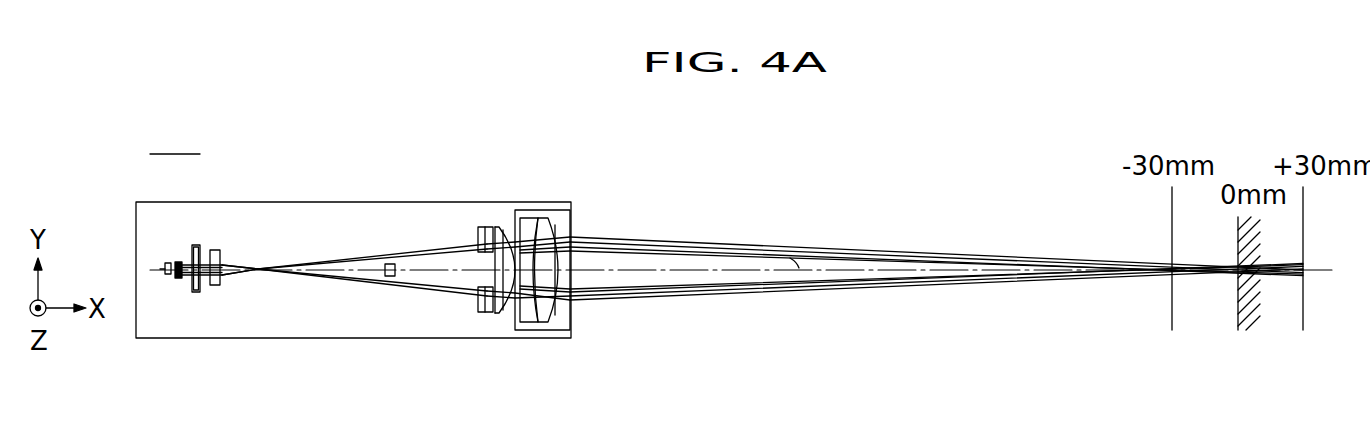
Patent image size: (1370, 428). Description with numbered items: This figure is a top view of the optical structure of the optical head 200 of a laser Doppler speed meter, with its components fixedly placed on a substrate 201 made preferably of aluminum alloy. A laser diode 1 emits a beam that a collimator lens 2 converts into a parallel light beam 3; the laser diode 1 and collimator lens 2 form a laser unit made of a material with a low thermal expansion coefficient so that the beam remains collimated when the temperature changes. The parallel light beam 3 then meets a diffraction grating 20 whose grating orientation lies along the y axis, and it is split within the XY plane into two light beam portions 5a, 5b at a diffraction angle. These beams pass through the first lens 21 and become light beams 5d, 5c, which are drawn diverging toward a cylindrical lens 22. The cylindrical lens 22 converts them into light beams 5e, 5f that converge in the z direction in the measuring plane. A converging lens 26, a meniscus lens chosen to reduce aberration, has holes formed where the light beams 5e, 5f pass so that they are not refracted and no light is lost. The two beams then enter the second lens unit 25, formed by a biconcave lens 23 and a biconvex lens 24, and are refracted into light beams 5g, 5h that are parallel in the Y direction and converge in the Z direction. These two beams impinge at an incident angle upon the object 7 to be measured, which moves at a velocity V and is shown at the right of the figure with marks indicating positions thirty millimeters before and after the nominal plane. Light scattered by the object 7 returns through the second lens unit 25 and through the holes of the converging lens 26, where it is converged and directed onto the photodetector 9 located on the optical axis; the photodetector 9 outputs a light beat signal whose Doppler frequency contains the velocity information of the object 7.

The laser diode 1 is at (165, 275).
The collimator lens 2 is at (178, 279).
The parallel light beam 3 is at (191, 262).
The diffraction grating 20 is at (198, 246).
The first lens 21 is at (218, 249).
The optical head 200 is at (170, 190).
The substrate 201 is at (357, 210).
The light beam 5a is at (205, 263).
The light beam 5b is at (208, 274).
The light beam 5c is at (277, 258).
The light beam 5d is at (277, 282).
The light beam 5e is at (497, 233).
The light beam 5f is at (500, 313).
The light beam 5g is at (623, 243).
The light beam 5h is at (628, 298).
The photodetector 9 is at (390, 263).
The cylindrical lens 22 is at (478, 233).
The biconcave lens 23 is at (528, 323).
The biconvex lens 24 is at (560, 323).
The second lens unit 25 is at (558, 227).
The converging lens 26 is at (505, 228).
The object to be measured 7 is at (1252, 318).